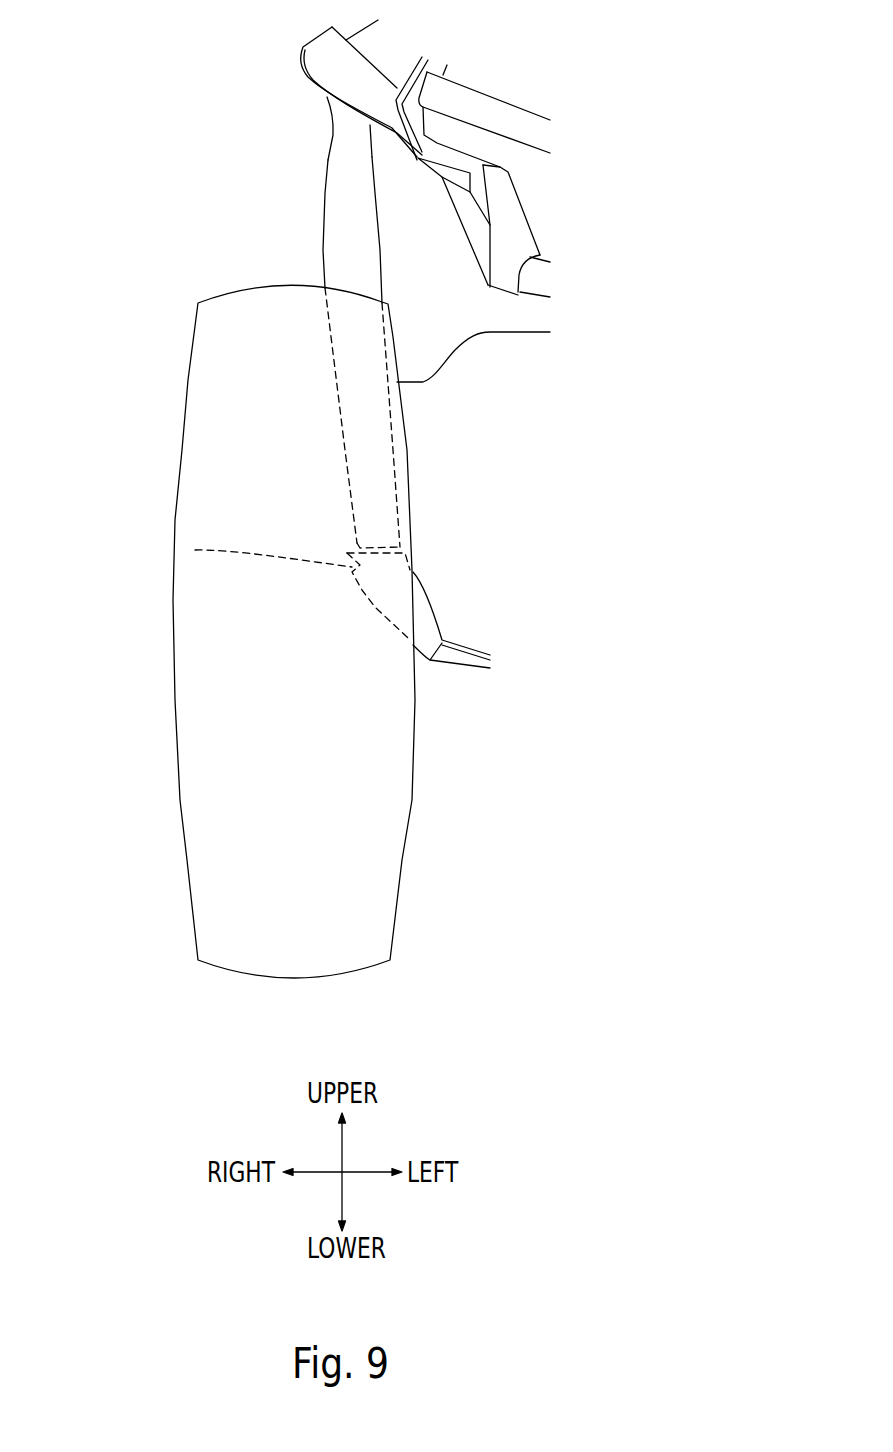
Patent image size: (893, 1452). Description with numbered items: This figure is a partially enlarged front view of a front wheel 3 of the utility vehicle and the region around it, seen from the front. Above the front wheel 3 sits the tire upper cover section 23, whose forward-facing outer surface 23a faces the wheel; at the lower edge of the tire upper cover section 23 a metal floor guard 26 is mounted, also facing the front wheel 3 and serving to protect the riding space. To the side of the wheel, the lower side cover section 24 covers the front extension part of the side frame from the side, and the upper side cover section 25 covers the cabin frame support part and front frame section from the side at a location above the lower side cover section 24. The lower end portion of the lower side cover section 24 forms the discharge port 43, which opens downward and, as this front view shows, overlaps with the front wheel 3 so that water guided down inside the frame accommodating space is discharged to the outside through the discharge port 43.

The upper side cover section 25 is at (322, 42).
The lower side cover section 24 is at (328, 160).
The tire upper cover section 23 is at (398, 203).
The outer surface 23a is at (405, 228).
The front wheel 3 is at (187, 382).
The discharge port 43 is at (195, 550).
The floor guard 26 is at (467, 583).